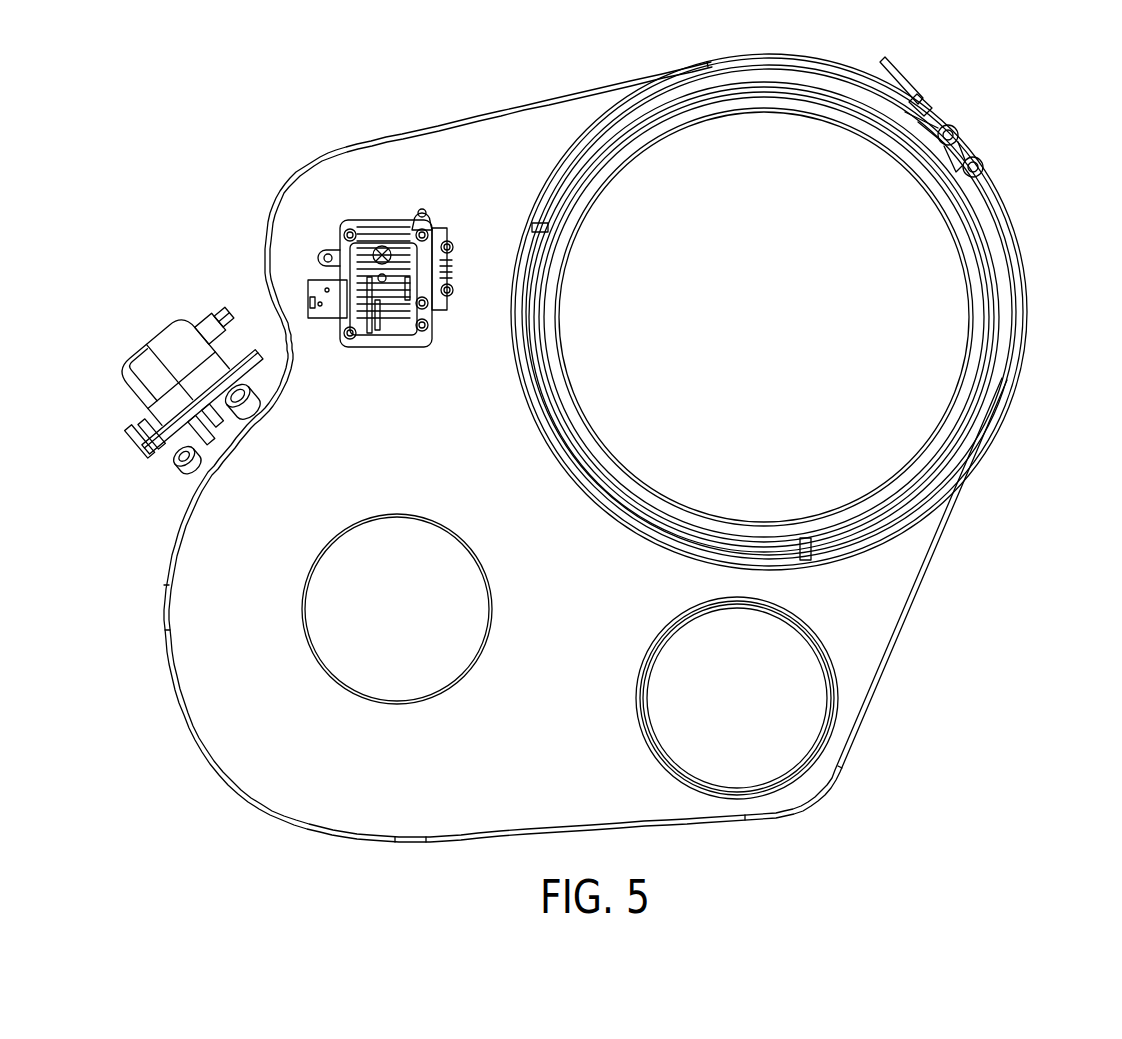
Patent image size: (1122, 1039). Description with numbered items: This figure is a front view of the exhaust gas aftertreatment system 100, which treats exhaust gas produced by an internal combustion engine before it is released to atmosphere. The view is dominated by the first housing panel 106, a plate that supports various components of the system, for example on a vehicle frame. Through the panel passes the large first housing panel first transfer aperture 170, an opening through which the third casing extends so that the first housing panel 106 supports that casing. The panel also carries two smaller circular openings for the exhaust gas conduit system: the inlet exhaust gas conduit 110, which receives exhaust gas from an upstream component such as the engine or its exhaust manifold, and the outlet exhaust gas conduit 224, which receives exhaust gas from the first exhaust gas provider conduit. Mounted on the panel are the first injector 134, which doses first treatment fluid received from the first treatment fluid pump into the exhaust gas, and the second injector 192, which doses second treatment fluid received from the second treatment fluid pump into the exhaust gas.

The exhaust gas aftertreatment system 100 is at (1036, 110).
The first housing panel 106 is at (527, 147).
The inlet exhaust gas conduit 110 is at (373, 702).
The first injector 134 is at (147, 377).
The first housing panel first transfer aperture 170 is at (945, 352).
The second injector 192 is at (387, 223).
The outlet exhaust gas conduit 224 is at (783, 707).